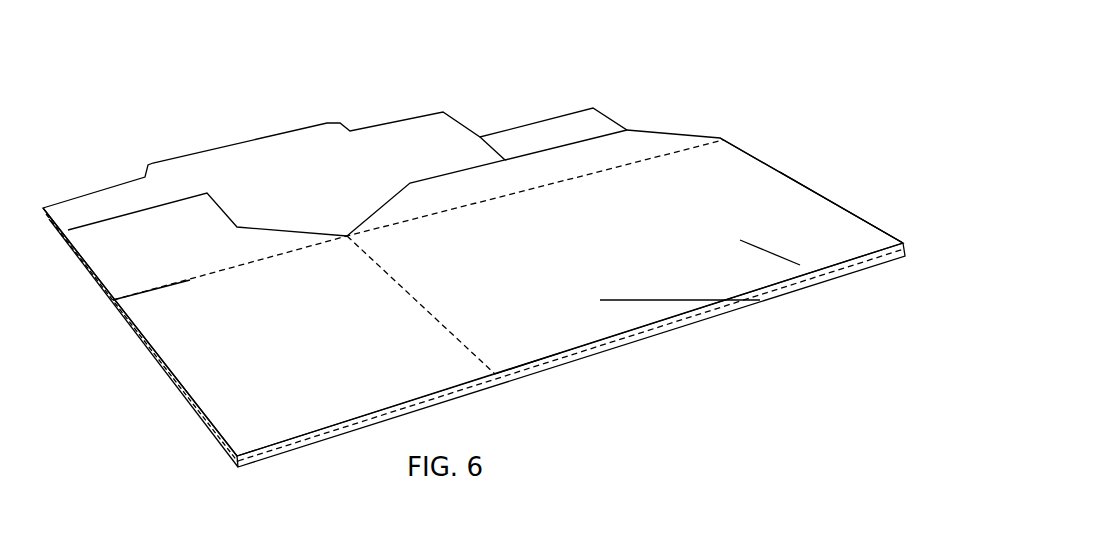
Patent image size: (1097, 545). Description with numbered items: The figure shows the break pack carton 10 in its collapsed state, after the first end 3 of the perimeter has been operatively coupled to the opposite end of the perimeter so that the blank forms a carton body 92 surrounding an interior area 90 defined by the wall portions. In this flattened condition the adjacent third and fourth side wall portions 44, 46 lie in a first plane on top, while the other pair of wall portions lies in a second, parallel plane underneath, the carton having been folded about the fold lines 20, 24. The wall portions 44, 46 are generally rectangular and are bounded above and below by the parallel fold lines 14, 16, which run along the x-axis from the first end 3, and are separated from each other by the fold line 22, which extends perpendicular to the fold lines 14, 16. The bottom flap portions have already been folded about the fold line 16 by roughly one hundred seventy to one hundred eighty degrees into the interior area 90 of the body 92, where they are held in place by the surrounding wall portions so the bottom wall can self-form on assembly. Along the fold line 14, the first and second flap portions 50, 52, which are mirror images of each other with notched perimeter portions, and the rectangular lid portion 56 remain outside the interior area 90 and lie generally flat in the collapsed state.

The break pack carton 10 is at (794, 116).
The first end 3 is at (833, 197).
The fold line 14 is at (148, 293).
The fold line 16 is at (615, 343).
The fold line 20 is at (170, 372).
The fold line 22 is at (393, 275).
The fold line 24 is at (890, 230).
The third side wall portion 44 is at (252, 408).
The fourth side wall portion 46 is at (687, 278).
The first flap portion 50 is at (540, 128).
The second flap portion 52 is at (95, 230).
The lid portion 56 is at (302, 165).
The interior area 90 is at (532, 378).
The carton body 92 is at (777, 264).